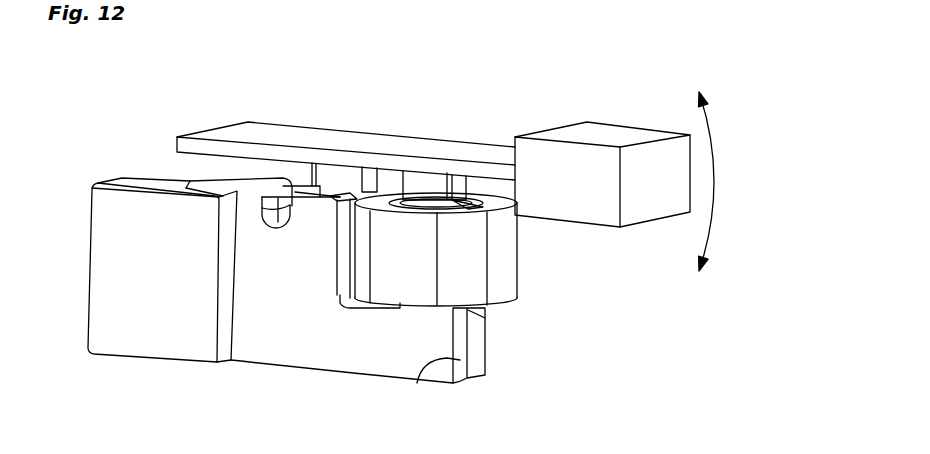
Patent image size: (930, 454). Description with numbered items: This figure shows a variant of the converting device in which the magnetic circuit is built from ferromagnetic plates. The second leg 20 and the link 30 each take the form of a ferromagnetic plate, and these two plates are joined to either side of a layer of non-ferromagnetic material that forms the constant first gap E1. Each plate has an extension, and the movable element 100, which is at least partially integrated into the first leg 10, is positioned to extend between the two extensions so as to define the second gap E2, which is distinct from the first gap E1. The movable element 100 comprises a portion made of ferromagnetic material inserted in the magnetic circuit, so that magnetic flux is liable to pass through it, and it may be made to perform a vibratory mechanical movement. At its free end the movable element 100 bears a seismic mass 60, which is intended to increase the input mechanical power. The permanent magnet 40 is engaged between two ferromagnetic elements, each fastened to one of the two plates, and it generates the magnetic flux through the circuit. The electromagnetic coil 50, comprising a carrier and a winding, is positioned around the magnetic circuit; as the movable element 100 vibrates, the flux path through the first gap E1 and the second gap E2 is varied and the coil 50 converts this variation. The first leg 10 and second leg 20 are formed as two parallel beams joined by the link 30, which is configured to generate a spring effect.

The movable element 100 is at (472, 143).
The first leg 10 is at (350, 140).
The second leg 20 is at (460, 360).
The link 30 is at (243, 177).
The permanent magnet 40 is at (155, 177).
The electromagnetic coil 50 is at (508, 267).
The seismic mass 60 is at (605, 133).
The first gap E1 is at (487, 365).
The second gap E2 is at (433, 173).